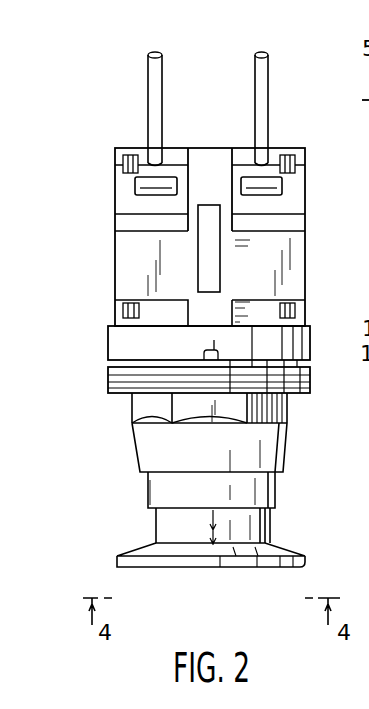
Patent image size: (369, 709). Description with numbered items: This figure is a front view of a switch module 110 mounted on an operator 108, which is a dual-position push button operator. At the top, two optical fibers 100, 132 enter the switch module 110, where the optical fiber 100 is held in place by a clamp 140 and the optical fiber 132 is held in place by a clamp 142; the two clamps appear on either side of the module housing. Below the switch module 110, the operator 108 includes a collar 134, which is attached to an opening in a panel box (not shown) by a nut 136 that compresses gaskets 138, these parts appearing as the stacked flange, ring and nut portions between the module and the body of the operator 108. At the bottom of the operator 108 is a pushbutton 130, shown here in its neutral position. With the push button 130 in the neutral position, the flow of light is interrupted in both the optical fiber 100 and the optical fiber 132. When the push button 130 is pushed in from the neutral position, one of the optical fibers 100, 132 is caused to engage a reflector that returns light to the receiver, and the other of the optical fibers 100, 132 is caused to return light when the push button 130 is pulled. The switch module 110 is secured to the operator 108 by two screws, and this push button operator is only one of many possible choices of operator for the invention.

The optical fiber 100 is at (162, 93).
The optical fiber 132 is at (268, 93).
The switch module 110 is at (115, 258).
The clamp 140 is at (137, 190).
The clamp 142 is at (275, 200).
The collar 134 is at (313, 333).
The gaskets 138 is at (310, 377).
The nut 136 is at (287, 410).
The operator 108 is at (138, 457).
The pushbutton 130 is at (288, 547).